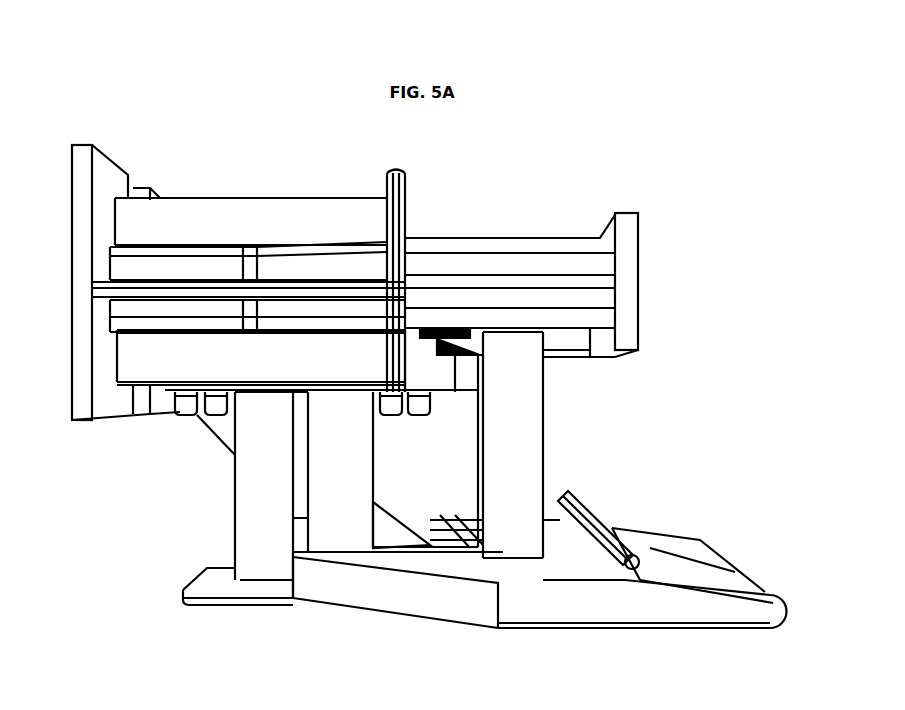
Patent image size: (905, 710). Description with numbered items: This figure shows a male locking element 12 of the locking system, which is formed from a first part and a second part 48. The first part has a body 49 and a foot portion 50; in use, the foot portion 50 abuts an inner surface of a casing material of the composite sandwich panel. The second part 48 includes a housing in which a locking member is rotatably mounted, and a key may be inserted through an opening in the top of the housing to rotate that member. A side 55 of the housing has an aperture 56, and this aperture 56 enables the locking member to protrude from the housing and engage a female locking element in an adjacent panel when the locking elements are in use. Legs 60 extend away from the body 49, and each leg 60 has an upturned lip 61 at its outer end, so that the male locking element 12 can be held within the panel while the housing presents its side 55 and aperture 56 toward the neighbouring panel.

The male locking element 12 is at (106, 468).
The second part 48 is at (72, 267).
The body 49 is at (247, 523).
The foot portion 50 is at (408, 598).
The side 55 is at (637, 213).
The aperture 56 is at (655, 289).
The legs 60 is at (752, 613).
The upturned lip 61 is at (630, 547).